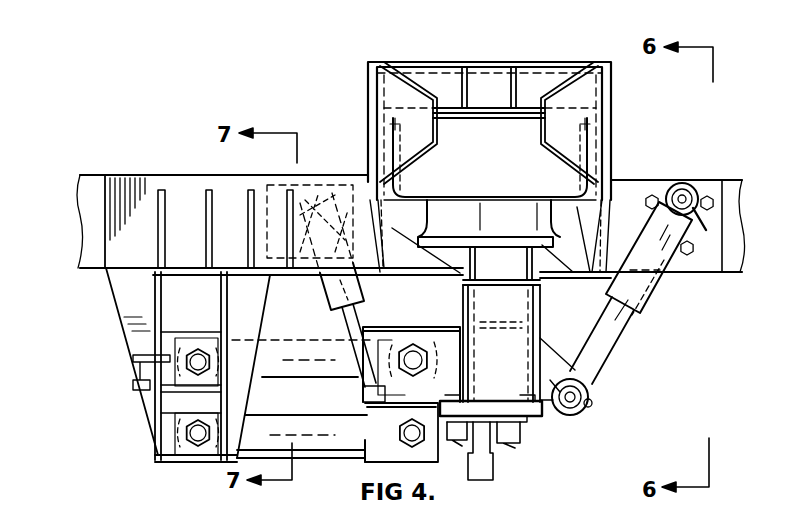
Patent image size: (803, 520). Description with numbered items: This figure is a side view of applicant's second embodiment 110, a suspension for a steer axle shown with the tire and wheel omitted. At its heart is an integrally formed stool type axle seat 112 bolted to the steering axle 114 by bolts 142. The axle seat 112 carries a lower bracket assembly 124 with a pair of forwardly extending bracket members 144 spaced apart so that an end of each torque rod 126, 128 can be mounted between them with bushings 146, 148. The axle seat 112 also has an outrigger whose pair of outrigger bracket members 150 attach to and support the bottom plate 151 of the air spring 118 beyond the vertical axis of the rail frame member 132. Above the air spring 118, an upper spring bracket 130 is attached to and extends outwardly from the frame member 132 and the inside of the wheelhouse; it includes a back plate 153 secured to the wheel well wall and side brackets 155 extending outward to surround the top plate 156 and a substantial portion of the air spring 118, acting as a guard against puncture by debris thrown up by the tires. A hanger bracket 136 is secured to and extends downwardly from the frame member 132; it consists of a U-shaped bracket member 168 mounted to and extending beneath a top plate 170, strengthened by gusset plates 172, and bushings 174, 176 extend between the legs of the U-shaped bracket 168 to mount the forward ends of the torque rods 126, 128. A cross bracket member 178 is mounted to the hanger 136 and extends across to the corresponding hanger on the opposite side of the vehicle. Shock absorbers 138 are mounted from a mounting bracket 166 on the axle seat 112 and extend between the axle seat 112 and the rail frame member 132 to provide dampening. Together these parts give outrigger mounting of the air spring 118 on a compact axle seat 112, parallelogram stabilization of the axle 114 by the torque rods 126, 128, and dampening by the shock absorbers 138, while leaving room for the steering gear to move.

The second embodiment 110 is at (571, 432).
The stool type axle seat 112 is at (557, 320).
The steering axle 114 is at (480, 477).
The air spring 118 is at (500, 168).
The lower bracket assembly 124 is at (364, 471).
The torque rod 126 is at (295, 348).
The torque rod 128 is at (310, 445).
The upper spring bracket 130 is at (530, 76).
The frame member 132 is at (727, 181).
The hanger bracket 136 is at (110, 329).
The shock absorber 138 is at (353, 300).
The bolt 142 is at (488, 460).
The bracket member 144 is at (367, 397).
The bushing 146 is at (413, 347).
The bushing 148 is at (423, 410).
The outrigger bracket member 150 is at (527, 263).
The bottom plate 151 is at (473, 234).
The back plate 153 is at (447, 50).
The side bracket 155 is at (390, 92).
The top plate 156 is at (478, 110).
The mounting bracket 166 is at (596, 374).
The U-shaped bracket member 168 is at (258, 398).
The top plate 170 is at (150, 273).
The gusset plate 172 is at (290, 200).
The bushing 174 is at (195, 369).
The bushing 176 is at (198, 437).
The cross bracket member 178 is at (137, 387).